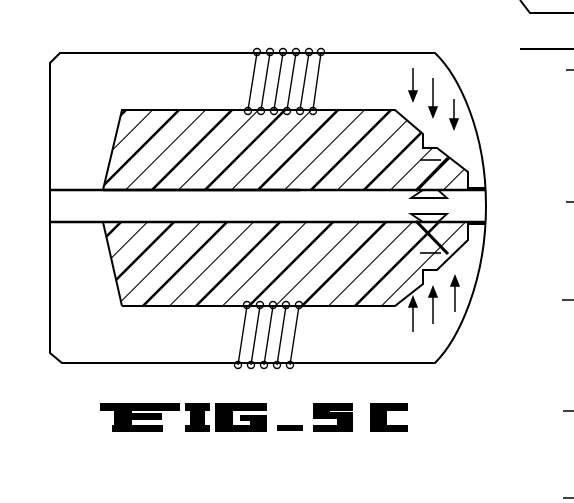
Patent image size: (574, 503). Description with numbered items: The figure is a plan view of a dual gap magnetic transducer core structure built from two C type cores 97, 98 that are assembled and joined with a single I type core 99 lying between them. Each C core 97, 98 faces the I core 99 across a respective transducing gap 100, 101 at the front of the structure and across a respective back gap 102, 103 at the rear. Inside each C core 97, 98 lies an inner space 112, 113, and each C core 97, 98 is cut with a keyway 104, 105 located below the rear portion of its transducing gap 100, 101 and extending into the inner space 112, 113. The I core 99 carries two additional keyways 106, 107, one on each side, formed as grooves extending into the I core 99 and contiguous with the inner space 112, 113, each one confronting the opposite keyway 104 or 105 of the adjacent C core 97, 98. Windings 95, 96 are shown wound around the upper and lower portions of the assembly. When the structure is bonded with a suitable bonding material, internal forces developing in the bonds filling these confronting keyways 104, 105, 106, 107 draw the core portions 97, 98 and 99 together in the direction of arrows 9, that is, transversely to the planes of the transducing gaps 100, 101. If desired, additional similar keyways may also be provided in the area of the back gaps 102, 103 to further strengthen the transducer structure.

The arrows 9 is at (434, 201).
The upper coil 95 is at (297, 50).
The lower coil 96 is at (263, 313).
The C type core 97 is at (96, 62).
The C type core 98 is at (325, 312).
The I type core 99 is at (190, 197).
The transducing gap 100 is at (486, 190).
The transducing gap 101 is at (486, 223).
The back gap 102 is at (50, 190).
The back gap 103 is at (50, 222).
The keyway 104 is at (423, 150).
The keyway 105 is at (427, 262).
The keyway 106 is at (427, 169).
The keyway 107 is at (427, 231).
The inner space 112 is at (157, 113).
The inner space 113 is at (140, 297).